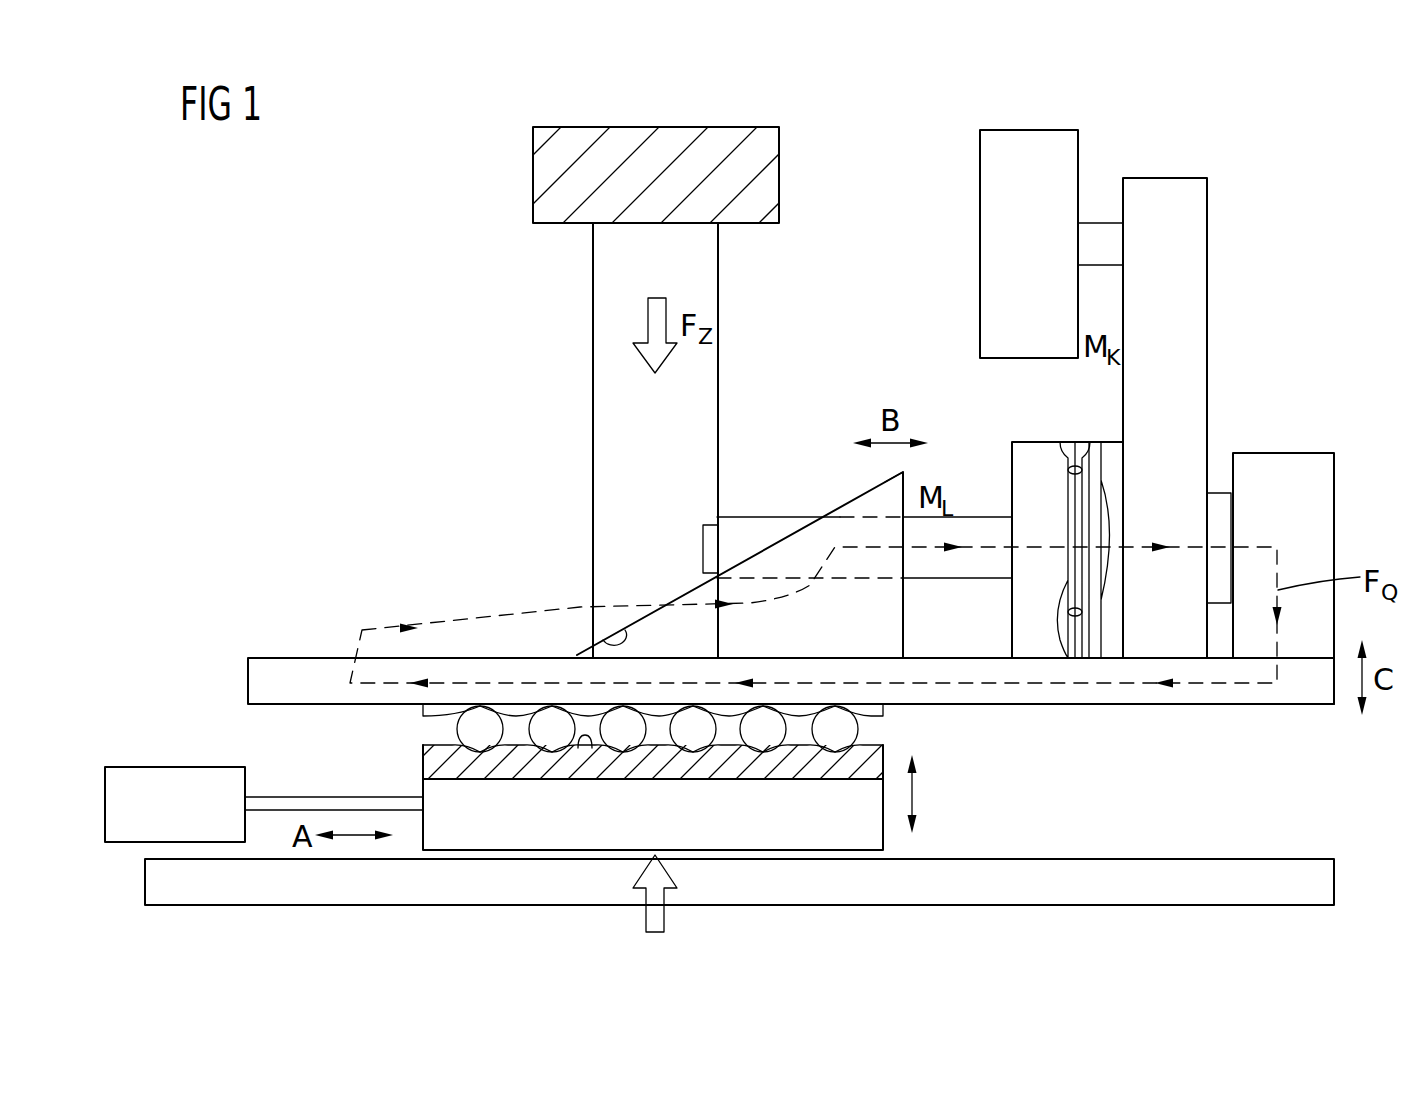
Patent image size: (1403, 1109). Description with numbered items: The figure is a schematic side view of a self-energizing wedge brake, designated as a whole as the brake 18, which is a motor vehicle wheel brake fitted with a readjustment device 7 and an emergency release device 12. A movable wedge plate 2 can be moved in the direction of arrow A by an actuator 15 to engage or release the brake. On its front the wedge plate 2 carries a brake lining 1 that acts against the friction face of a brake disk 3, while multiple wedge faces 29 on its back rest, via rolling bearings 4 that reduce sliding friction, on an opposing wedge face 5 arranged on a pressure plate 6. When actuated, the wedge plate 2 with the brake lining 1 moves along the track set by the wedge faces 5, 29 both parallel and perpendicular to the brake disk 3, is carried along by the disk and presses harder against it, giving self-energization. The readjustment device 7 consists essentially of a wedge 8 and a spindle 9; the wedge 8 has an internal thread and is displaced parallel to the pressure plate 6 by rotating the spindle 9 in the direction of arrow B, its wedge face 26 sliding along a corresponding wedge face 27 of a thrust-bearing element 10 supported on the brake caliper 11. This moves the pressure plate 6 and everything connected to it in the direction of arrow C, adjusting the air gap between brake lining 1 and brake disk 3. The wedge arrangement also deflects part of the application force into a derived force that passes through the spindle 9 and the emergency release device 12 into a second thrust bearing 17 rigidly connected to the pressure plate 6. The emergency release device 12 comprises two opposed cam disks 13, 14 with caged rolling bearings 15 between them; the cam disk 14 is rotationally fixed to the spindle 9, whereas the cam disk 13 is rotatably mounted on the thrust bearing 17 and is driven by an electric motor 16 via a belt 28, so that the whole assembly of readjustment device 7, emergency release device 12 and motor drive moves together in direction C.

The brake lining 1 is at (450, 797).
The movable wedge plate 2 is at (433, 760).
The brake disk 3 is at (160, 880).
The rolling bearings 4 is at (848, 731).
The opposing wedge face 5 is at (423, 712).
The pressure plate 6 is at (268, 672).
The readjustment device 7 is at (809, 488).
The wedge 8 is at (887, 493).
The spindle 9 is at (958, 566).
The thrust-bearing element 10 is at (597, 478).
The brake caliper 11 is at (762, 185).
The emergency release device 12 is at (1058, 432).
The cam disk 13 is at (1112, 450).
The cam disk 14 is at (1010, 450).
The actuator / rolling bearings 15 is at (1075, 442).
The electric motor 16 is at (997, 225).
The second thrust bearing 17 is at (1292, 472).
The brake 18 is at (945, 792).
The wedge face 26 is at (778, 540).
The wedge face 27 is at (600, 640).
The belt 28 is at (1190, 253).
The wedge faces 29 is at (585, 745).